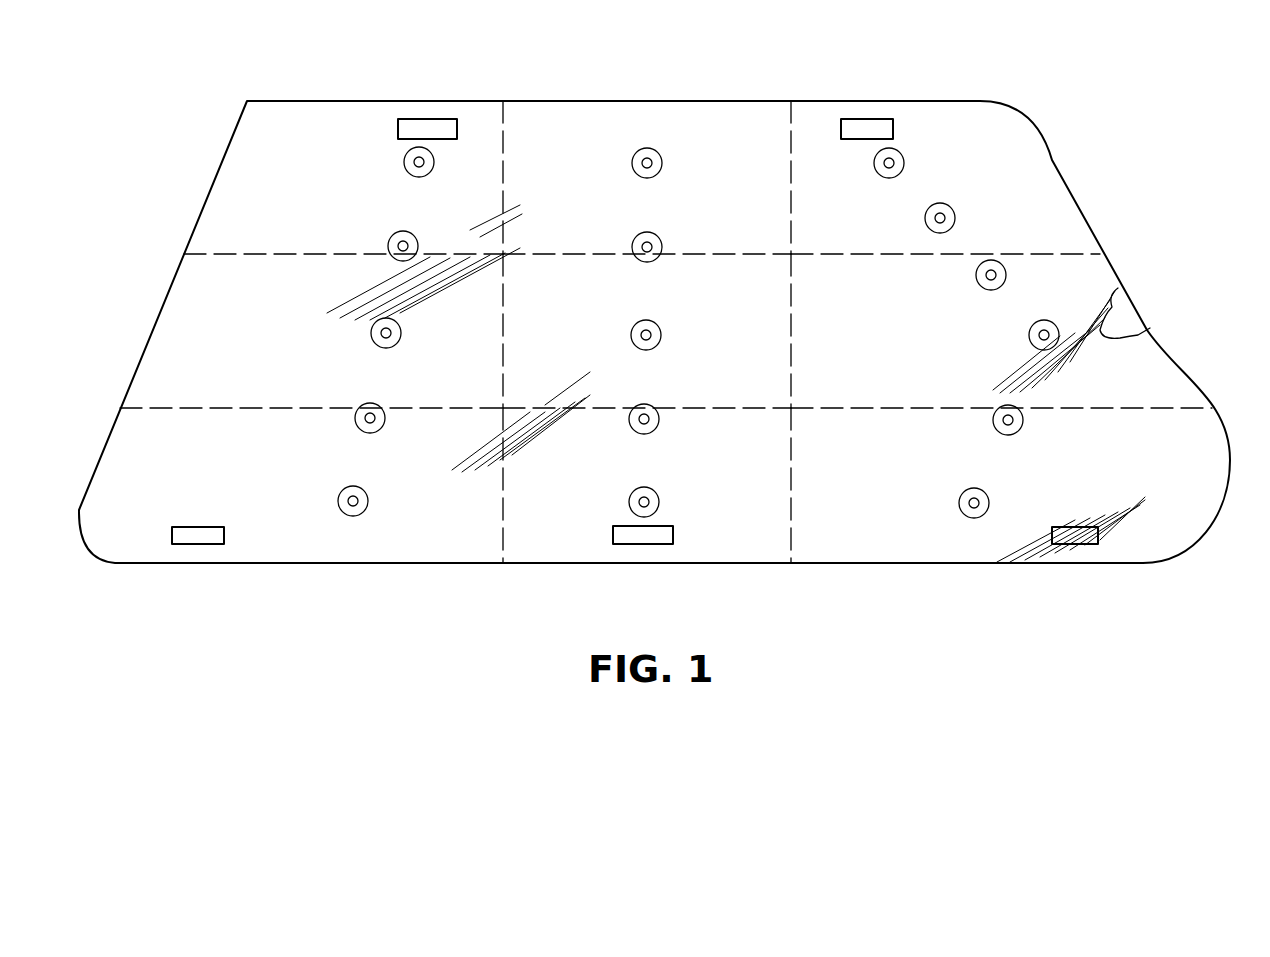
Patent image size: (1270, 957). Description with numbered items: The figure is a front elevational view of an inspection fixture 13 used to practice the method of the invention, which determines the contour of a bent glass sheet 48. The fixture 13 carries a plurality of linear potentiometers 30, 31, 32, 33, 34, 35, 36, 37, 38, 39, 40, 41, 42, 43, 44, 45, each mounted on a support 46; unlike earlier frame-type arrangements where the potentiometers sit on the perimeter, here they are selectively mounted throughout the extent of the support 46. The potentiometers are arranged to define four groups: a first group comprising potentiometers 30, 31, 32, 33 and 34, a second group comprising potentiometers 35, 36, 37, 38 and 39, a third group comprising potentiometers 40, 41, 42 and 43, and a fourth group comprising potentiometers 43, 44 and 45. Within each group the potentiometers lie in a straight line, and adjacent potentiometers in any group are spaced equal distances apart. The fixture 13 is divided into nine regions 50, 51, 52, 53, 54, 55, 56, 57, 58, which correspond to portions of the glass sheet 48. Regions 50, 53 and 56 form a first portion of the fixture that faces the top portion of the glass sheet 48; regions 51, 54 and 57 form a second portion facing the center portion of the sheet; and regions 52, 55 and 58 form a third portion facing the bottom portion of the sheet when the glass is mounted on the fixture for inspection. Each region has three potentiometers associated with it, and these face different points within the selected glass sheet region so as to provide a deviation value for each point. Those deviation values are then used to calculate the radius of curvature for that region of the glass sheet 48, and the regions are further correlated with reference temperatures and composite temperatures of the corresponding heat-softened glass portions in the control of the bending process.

The inspection fixture 13 is at (1147, 157).
The linear potentiometer 30 is at (419, 177).
The linear potentiometer 31 is at (390, 240).
The linear potentiometer 32 is at (401, 333).
The linear potentiometer 33 is at (385, 423).
The linear potentiometer 34 is at (368, 499).
The linear potentiometer 35 is at (658, 152).
The linear potentiometer 36 is at (658, 237).
The linear potentiometer 37 is at (636, 323).
The linear potentiometer 38 is at (659, 421).
The linear potentiometer 39 is at (660, 500).
The linear potentiometer 40 is at (903, 155).
The linear potentiometer 41 is at (952, 208).
The linear potentiometer 42 is at (977, 278).
The linear potentiometer 43 is at (1030, 328).
The linear potentiometer 44 is at (1023, 425).
The linear potentiometer 45 is at (960, 500).
The support 46 is at (1122, 320).
The glass sheet 48 is at (1032, 552).
The region 50 is at (306, 197).
The region 51 is at (262, 340).
The region 52 is at (223, 466).
The region 53 is at (565, 190).
The region 54 is at (716, 344).
The region 55 is at (548, 454).
The region 56 is at (830, 223).
The region 57 is at (871, 352).
The region 58 is at (850, 462).